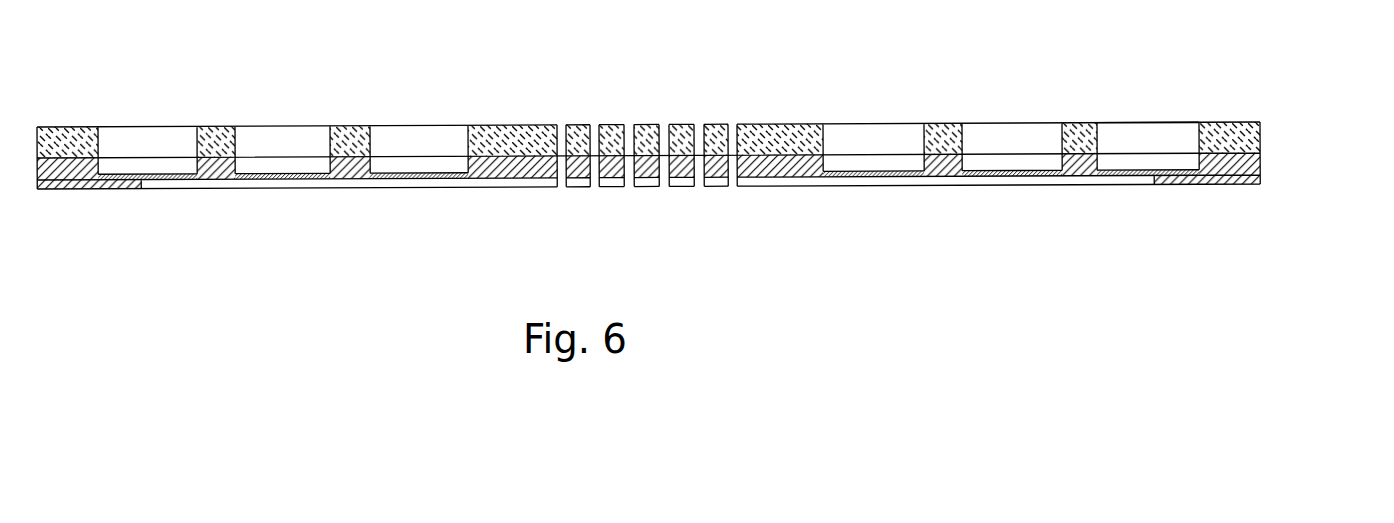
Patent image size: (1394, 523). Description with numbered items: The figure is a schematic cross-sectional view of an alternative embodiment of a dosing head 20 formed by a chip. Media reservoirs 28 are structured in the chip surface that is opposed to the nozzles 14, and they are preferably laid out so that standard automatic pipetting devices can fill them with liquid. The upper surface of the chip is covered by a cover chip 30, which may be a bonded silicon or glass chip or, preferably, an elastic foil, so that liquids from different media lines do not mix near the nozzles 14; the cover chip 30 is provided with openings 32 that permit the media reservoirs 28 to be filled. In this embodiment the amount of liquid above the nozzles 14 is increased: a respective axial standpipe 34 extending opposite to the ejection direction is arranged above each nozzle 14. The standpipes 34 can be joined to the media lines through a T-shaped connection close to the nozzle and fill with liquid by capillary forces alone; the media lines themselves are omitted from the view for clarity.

The nozzles 14 is at (558, 188).
The dosing head 20 is at (1262, 167).
The media reservoirs 28 is at (1130, 162).
The cover chip 30 is at (1262, 133).
The openings 32 is at (1165, 132).
The standpipes 34 is at (697, 123).